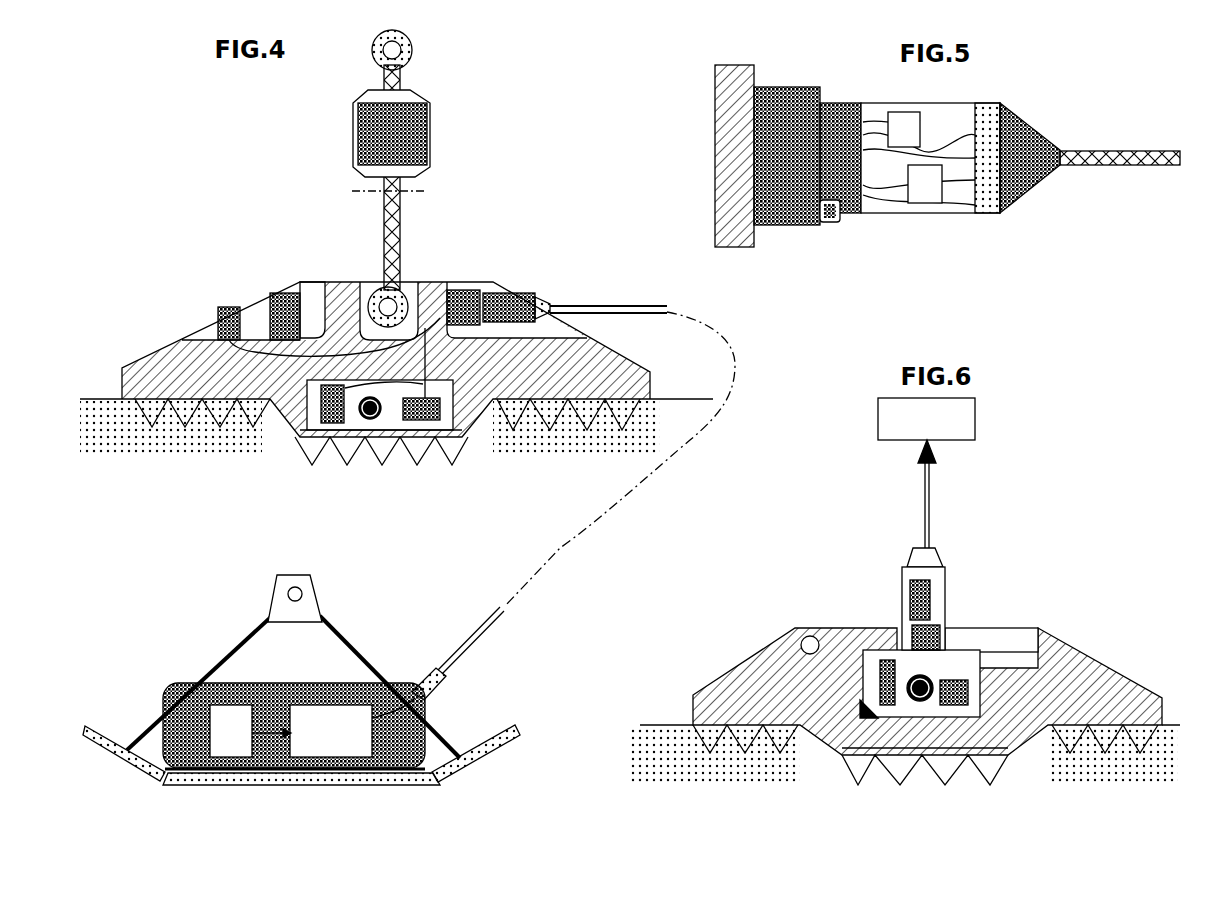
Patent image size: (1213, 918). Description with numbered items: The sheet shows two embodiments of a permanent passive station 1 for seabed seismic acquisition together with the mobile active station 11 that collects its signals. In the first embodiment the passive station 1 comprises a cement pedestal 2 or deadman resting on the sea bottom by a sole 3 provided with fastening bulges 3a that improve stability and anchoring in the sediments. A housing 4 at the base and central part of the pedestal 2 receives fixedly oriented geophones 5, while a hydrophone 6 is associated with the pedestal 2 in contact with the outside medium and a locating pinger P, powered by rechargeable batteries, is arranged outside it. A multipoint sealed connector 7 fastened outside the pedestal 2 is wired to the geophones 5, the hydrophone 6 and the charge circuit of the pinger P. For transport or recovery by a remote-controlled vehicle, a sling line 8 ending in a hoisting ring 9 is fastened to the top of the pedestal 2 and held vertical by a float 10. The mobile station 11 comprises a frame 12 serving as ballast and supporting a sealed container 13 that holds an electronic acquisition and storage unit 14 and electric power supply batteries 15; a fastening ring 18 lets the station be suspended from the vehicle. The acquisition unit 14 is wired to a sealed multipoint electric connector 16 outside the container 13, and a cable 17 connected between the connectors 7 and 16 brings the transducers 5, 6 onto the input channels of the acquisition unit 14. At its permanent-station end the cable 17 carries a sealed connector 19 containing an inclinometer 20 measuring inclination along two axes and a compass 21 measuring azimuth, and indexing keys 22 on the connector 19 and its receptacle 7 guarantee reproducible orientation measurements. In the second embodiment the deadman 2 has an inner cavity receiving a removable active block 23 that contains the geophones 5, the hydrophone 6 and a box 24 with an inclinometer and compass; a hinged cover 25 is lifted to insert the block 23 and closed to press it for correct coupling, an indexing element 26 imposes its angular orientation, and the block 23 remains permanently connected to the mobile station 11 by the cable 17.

In FIG. 4, the passive station 1 is at (540, 183).
In FIG. 6, the passive station 1 is at (828, 595).
In FIG. 4, the pedestal 2 is at (182, 372).
In FIG. 5, the pedestal 2 is at (752, 233).
In FIG. 6, the pedestal 2 is at (748, 692).
In FIG. 4, the sole 3 is at (583, 434).
In FIG. 4, the fastening bulges 3a is at (462, 455).
In FIG. 4, the housing 4 is at (312, 410).
In FIG. 4, the geophones 5 is at (377, 424).
In FIG. 6, the geophones 5 is at (958, 705).
In FIG. 4, the hydrophone 6 is at (290, 290).
In FIG. 6, the hydrophone 6 is at (900, 570).
In FIG. 4, the multipoint sealed connector 7 is at (476, 300).
In FIG. 5, the multipoint sealed connector 7 is at (800, 215).
In FIG. 4, the sling line 8 is at (412, 211).
In FIG. 4, the hoisting ring 9 is at (412, 50).
In FIG. 4, the float 10 is at (432, 128).
In FIG. 4, the active station 11 is at (344, 653).
In FIG. 6, the active station 11 is at (926, 419).
In FIG. 4, the frame 12 is at (500, 752).
In FIG. 4, the sealed container 13 is at (166, 690).
In FIG. 4, the electronic acquisition and storage unit 14 is at (331, 731).
In FIG. 4, the electric power supply batteries 15 is at (231, 731).
In FIG. 4, the multipoint electric connector 16 is at (440, 680).
In FIG. 4, the cable 17 is at (683, 302).
In FIG. 5, the cable 17 is at (1148, 168).
In FIG. 6, the cable 17 is at (930, 500).
In FIG. 4, the fastening ring 18 is at (285, 595).
In FIG. 4, the connector 19 is at (538, 302).
In FIG. 5, the connector 19 is at (974, 198).
In FIG. 5, the inclinometer 20 is at (904, 129).
In FIG. 5, the compass 21 is at (925, 184).
In FIG. 5, the indexing keys 22 is at (843, 220).
In FIG. 6, the removable active block 23 is at (965, 660).
In FIG. 6, the box 24 is at (940, 625).
In FIG. 6, the hinged cover 25 is at (1020, 652).
In FIG. 6, the indexing element 26 is at (850, 780).
In FIG. 4, the pinger P is at (218, 300).